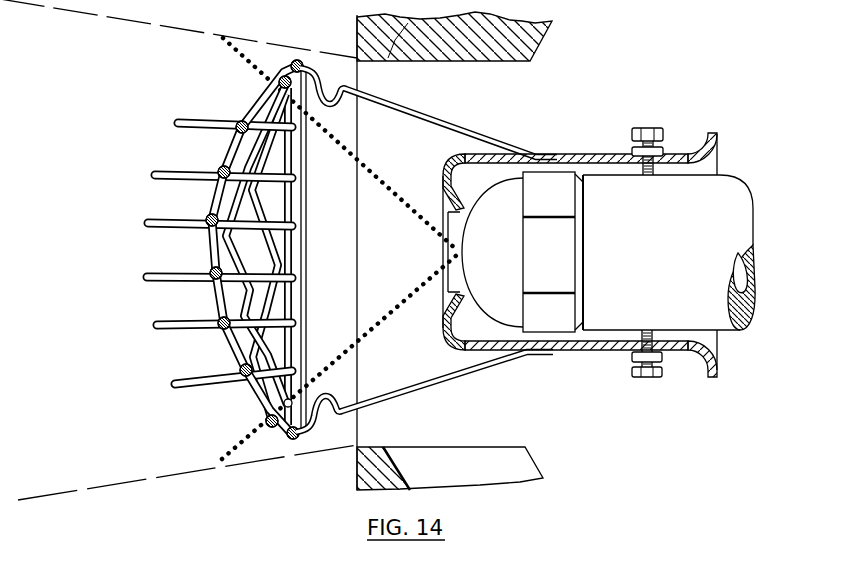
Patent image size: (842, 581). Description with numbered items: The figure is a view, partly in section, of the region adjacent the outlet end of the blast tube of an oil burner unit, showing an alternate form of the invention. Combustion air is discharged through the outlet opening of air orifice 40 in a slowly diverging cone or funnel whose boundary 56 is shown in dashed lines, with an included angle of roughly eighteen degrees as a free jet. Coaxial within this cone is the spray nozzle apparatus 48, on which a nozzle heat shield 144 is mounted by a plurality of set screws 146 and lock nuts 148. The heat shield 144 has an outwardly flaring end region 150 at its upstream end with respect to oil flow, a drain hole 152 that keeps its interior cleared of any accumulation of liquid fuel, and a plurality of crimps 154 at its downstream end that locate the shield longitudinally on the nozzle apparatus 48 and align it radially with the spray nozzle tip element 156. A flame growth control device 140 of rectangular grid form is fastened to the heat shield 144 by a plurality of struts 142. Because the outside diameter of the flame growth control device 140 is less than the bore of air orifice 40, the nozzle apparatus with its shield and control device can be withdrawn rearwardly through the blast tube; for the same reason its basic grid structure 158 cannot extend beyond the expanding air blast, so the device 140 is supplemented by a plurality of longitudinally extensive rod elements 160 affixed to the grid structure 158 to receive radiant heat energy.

The air orifice 40 is at (358, 33).
The spray nozzle apparatus 48 is at (762, 150).
The boundary of air flow pattern 56 is at (168, 28).
The flame growth control device 140 is at (198, 249).
The struts 142 is at (444, 120).
The nozzle heat shield 144 is at (605, 122).
The set screws 146 is at (662, 378).
The lock nuts 148 is at (630, 353).
The outwardly flaring end region 150 is at (717, 362).
The drain hole 152 is at (509, 352).
The crimps 154 is at (450, 183).
The spray nozzle tip element 156 is at (447, 323).
The basic grid structure 158 is at (232, 354).
The rod elements 160 is at (166, 234).